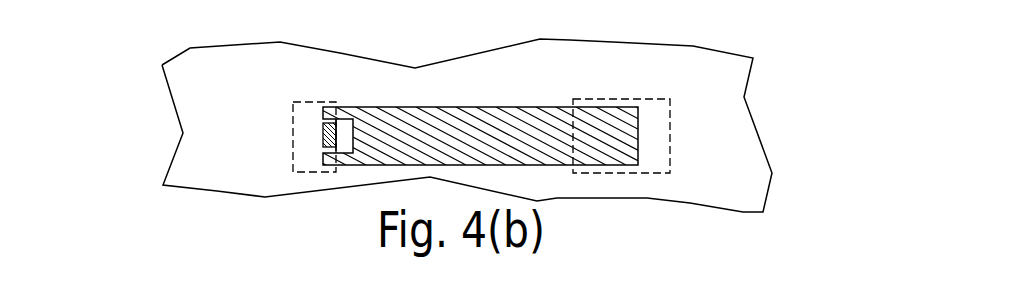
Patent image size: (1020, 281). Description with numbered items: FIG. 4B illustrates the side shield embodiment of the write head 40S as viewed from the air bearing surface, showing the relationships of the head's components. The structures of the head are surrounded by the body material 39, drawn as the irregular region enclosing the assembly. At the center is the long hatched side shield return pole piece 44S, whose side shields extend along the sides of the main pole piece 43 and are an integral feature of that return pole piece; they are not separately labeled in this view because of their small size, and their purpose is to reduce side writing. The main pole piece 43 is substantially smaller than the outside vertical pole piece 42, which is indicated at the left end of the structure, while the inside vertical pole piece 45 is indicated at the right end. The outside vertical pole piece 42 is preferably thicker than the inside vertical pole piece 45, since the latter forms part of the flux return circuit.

The body material 39 is at (487, 69).
The write head 40S is at (405, 125).
The outside vertical pole piece 42 is at (303, 117).
The main pole piece 43 is at (323, 140).
The side shield return pole piece 44S is at (633, 128).
The inside vertical pole piece 45 is at (660, 160).